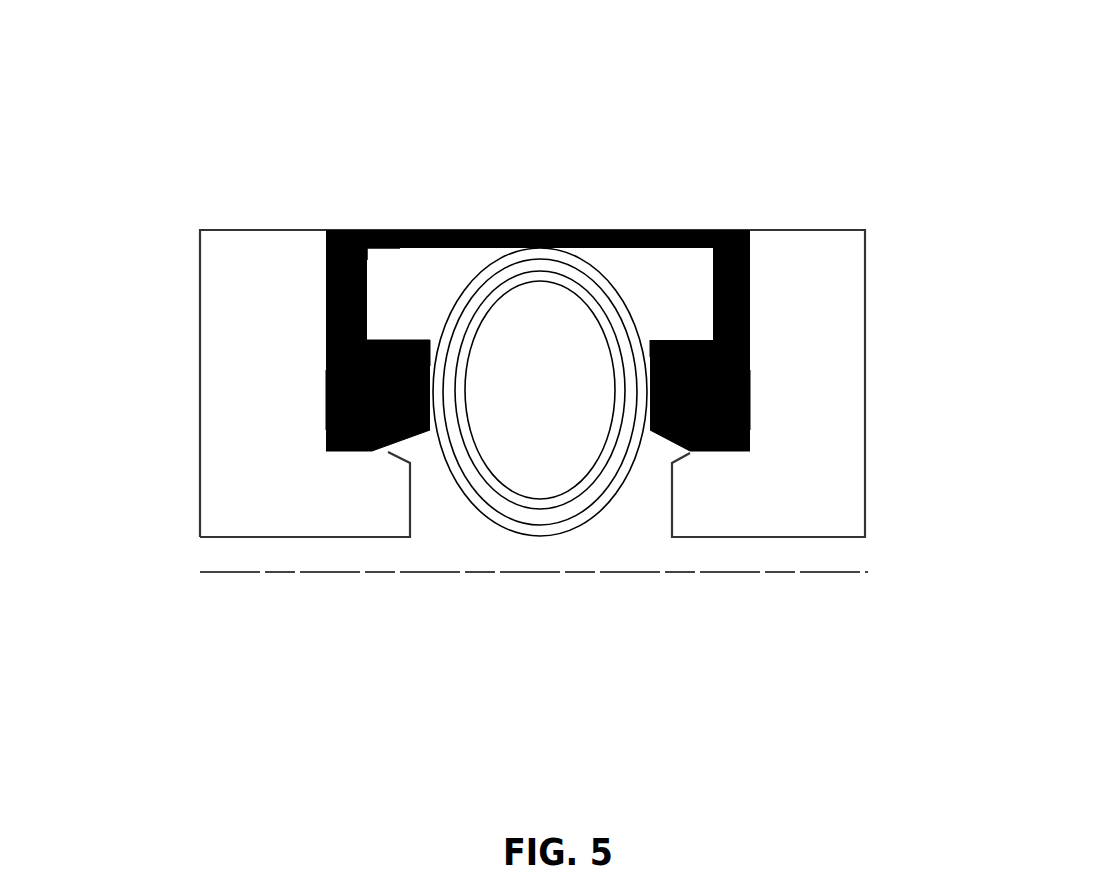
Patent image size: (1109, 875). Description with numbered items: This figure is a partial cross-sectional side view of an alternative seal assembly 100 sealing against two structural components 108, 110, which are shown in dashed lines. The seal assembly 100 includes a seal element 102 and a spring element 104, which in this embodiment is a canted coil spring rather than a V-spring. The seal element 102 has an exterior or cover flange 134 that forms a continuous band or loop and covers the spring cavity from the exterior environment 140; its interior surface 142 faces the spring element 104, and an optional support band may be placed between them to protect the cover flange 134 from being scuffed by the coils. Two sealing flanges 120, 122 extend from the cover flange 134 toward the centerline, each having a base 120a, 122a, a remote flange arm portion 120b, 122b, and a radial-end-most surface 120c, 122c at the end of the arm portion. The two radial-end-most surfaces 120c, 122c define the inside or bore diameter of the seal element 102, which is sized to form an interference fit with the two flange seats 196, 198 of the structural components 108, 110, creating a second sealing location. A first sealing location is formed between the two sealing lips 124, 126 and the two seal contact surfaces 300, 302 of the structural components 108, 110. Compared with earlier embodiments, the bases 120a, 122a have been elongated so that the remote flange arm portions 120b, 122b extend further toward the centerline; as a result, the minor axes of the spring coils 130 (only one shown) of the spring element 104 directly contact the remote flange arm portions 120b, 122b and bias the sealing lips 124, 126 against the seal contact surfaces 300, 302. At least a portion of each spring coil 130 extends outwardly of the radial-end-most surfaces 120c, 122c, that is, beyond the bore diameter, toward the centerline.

The seal assembly 100 is at (598, 128).
The seal element 102 is at (672, 215).
The spring element 104 is at (495, 530).
The structural component 108 is at (350, 532).
The structural component 110 is at (865, 480).
The sealing flange 120 is at (327, 423).
The base 120a is at (328, 270).
The remote flange arm portion 120b is at (328, 394).
The radial-end-most surface 120c is at (347, 453).
The sealing flange 122 is at (743, 435).
The base 122a is at (747, 287).
The remote flange arm portion 122b is at (753, 406).
The radial-end-most surface 122c is at (737, 453).
The sealing lip 124 is at (327, 367).
The sealing lip 126 is at (750, 357).
The spring coil 130 is at (580, 515).
The cover flange 134 is at (535, 222).
The exterior environment 140 is at (282, 128).
The interior surface 142 is at (422, 247).
The flange seat 196 is at (365, 453).
The flange seat 198 is at (708, 453).
The seal contact surface 300 is at (327, 358).
The seal contact surface 302 is at (750, 343).